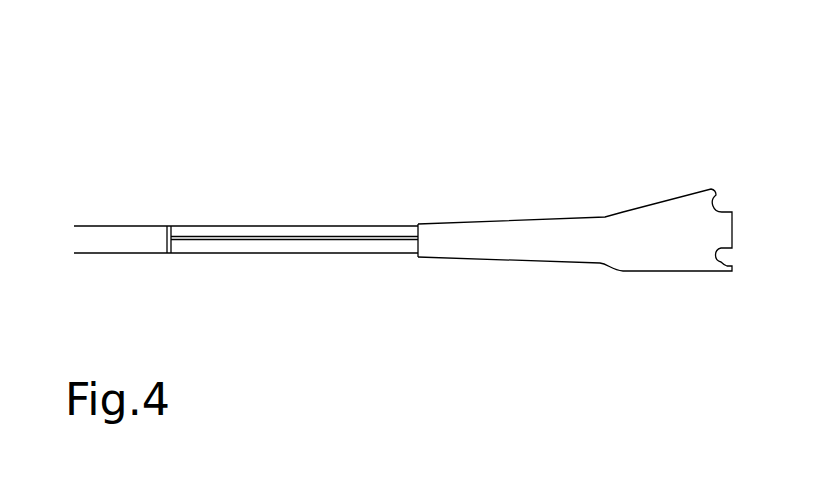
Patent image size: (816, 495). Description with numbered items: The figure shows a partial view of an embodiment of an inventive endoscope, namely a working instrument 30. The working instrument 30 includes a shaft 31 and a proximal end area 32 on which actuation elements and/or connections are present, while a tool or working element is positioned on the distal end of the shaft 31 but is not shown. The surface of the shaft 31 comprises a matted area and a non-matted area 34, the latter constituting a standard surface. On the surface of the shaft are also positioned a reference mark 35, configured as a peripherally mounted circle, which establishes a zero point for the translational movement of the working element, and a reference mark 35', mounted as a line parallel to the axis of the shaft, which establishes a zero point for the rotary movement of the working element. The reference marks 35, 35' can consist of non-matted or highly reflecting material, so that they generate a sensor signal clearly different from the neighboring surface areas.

The working instrument 30 is at (399, 171).
The shaft 31 is at (292, 171).
The proximal end area 32 is at (638, 143).
The non-matted area 34 is at (81, 240).
The reference mark 35 is at (172, 200).
The reference mark 35' is at (294, 279).